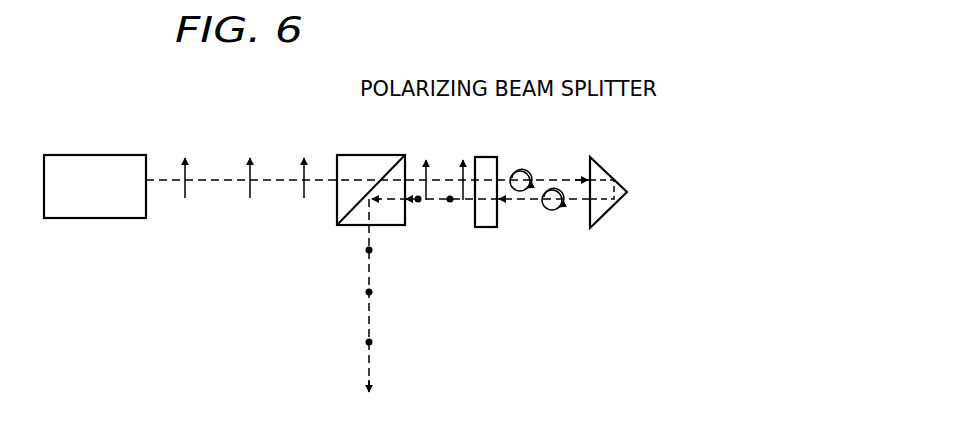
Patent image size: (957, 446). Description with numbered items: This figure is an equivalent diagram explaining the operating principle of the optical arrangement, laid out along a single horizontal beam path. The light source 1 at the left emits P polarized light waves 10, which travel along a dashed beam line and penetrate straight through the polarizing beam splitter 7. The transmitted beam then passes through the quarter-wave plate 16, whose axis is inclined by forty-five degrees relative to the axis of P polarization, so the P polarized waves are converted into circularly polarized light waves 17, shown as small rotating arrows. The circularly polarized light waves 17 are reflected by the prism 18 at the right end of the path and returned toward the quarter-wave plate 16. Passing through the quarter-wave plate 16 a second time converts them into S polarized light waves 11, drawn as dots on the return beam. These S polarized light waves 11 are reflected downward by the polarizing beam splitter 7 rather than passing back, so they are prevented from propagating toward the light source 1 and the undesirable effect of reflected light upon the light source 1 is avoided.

The light source 1 is at (121, 155).
The P polarized light waves 10 is at (187, 160).
The polarizing beam splitter 7 is at (372, 155).
The S polarized light waves 11 is at (450, 202).
The quarter-wave plate 16 is at (485, 157).
The circularly polarized light waves 17 is at (522, 171).
The prism 18 is at (604, 168).